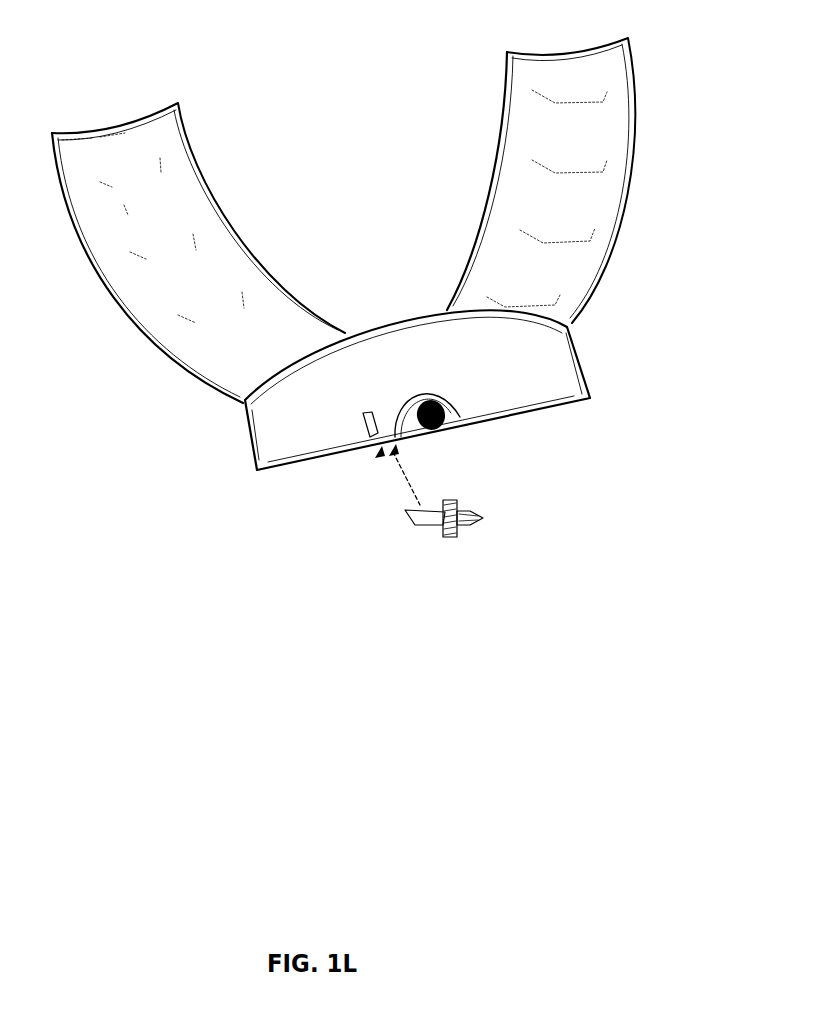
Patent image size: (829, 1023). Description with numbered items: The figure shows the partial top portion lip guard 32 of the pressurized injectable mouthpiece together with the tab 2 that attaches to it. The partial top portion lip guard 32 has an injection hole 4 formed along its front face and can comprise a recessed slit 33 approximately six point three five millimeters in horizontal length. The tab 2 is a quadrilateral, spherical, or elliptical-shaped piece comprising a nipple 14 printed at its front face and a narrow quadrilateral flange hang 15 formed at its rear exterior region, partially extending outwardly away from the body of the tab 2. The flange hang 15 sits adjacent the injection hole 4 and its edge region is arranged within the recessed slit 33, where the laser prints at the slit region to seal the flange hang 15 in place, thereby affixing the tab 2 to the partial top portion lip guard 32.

The tab 2 is at (462, 502).
The injection hole 4 is at (460, 417).
The nipple 14 is at (482, 525).
The flange hang 15 is at (430, 530).
The partial top portion lip guard 32 is at (293, 468).
The recessed slit 33 is at (373, 450).